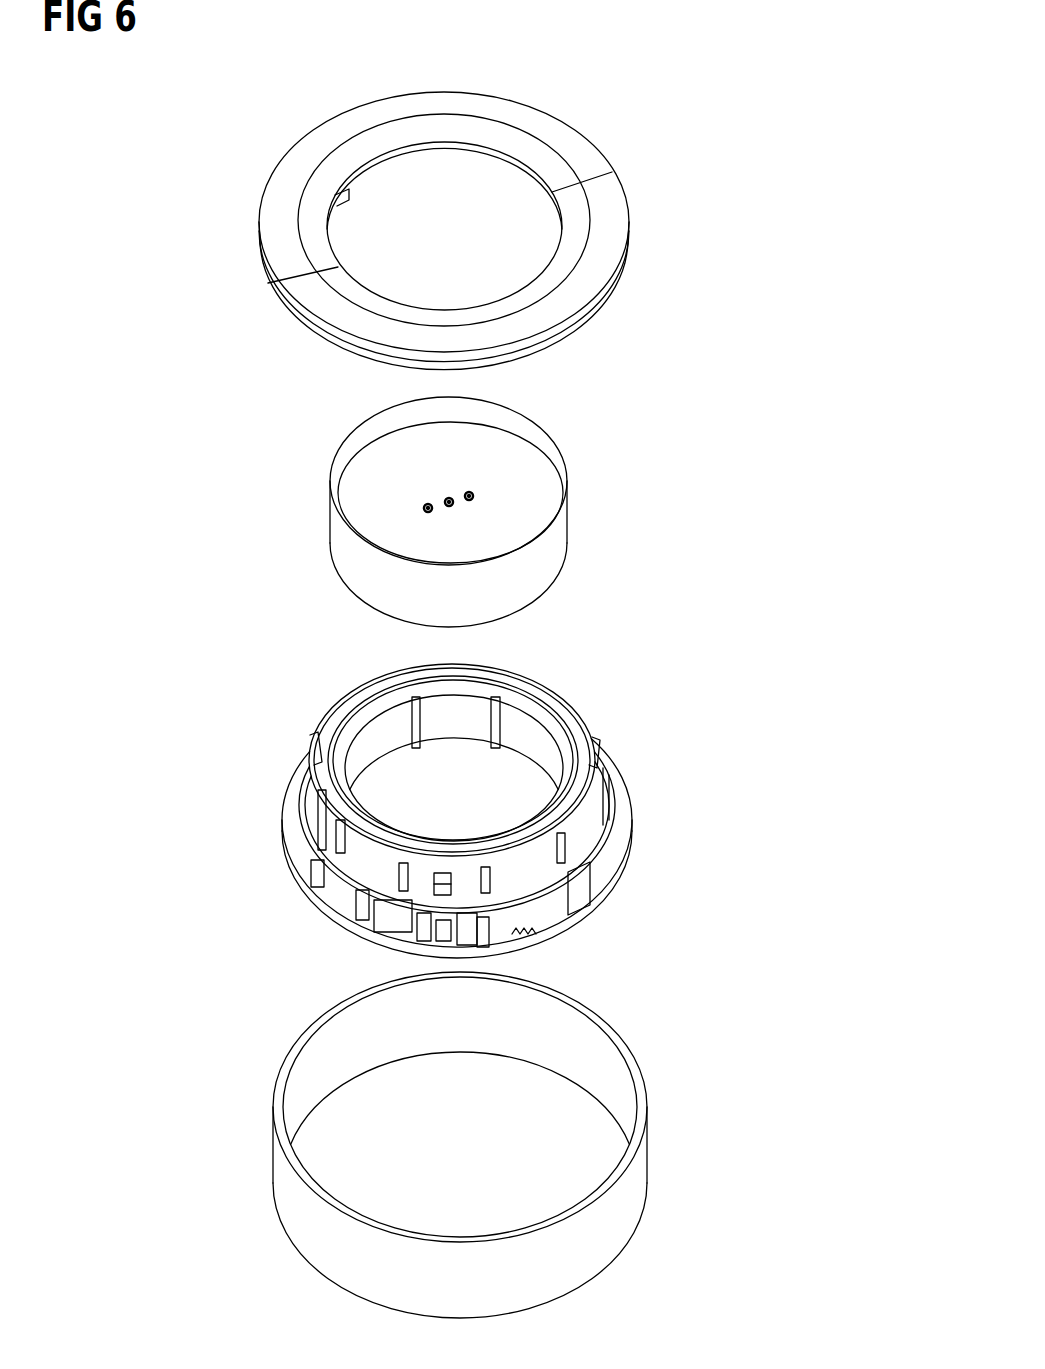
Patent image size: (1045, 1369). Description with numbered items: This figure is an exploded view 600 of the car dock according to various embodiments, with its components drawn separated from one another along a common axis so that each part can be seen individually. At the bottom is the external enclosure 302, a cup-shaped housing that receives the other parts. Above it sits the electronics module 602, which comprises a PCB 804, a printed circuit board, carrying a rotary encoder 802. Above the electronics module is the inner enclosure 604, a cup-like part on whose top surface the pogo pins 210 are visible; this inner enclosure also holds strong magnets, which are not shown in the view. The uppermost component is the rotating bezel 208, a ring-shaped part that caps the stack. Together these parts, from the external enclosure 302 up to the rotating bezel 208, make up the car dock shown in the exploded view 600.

The exploded view 600 is at (853, 93).
The rotating bezel 208 is at (590, 163).
The pogo pins 210 is at (460, 490).
The inner enclosure 604 is at (552, 540).
The rotary encoder 802 is at (560, 707).
The electronics module 602 is at (608, 757).
The PCB 804 is at (623, 855).
The external enclosure 302 is at (638, 1068).